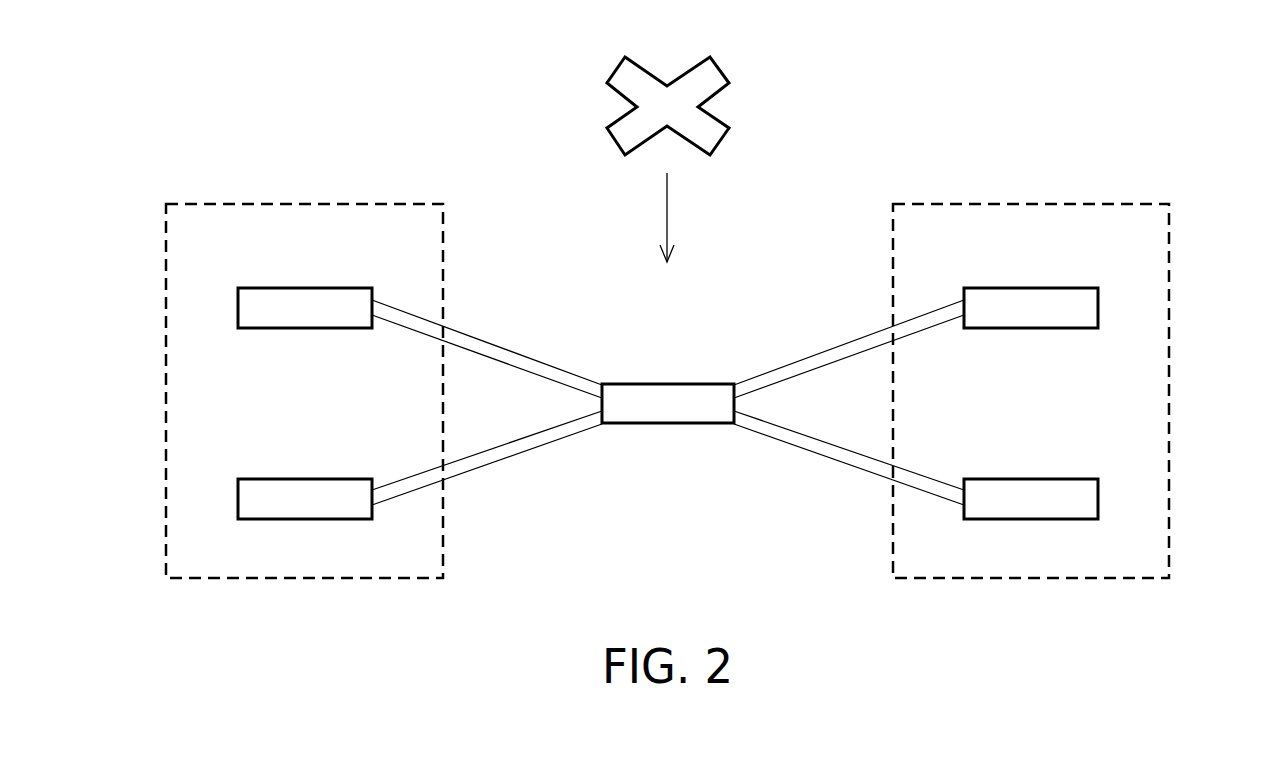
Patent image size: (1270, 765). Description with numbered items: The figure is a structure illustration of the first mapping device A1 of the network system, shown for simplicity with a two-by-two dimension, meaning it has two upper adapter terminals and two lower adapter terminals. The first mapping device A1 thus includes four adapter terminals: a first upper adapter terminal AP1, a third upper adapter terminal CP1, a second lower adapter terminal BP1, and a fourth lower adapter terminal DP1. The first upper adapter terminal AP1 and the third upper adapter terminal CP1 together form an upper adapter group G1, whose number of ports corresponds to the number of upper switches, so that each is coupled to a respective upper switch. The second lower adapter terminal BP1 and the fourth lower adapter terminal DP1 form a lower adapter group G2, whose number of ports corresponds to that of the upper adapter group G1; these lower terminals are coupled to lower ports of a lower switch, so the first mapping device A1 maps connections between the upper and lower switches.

The first mapping device A1 is at (688, 89).
The upper adapter group G1 is at (166, 378).
The lower adapter group G2 is at (1170, 378).
The first upper adapter terminal AP1 is at (303, 288).
The third upper adapter terminal CP1 is at (303, 479).
The second lower adapter terminal BP1 is at (1030, 288).
The fourth lower adapter terminal DP1 is at (1030, 479).